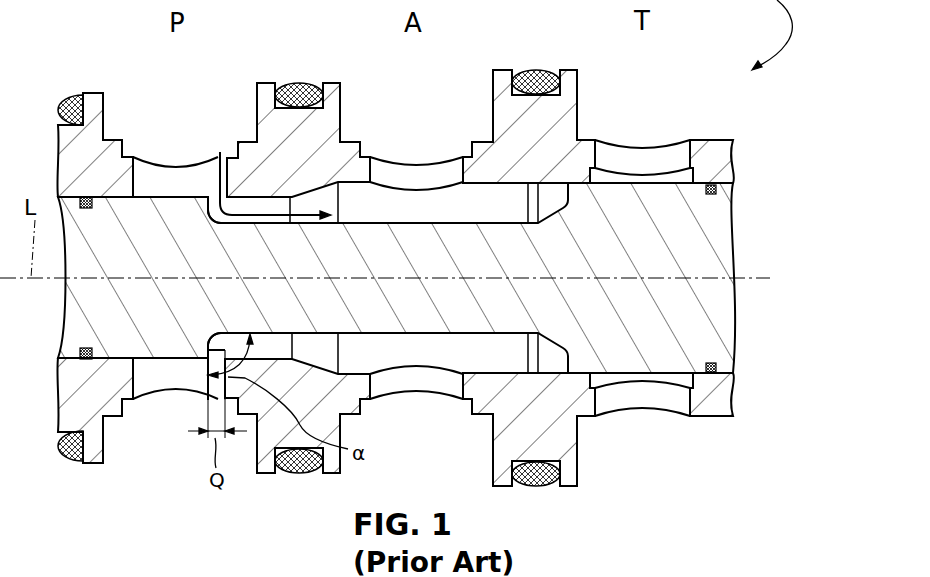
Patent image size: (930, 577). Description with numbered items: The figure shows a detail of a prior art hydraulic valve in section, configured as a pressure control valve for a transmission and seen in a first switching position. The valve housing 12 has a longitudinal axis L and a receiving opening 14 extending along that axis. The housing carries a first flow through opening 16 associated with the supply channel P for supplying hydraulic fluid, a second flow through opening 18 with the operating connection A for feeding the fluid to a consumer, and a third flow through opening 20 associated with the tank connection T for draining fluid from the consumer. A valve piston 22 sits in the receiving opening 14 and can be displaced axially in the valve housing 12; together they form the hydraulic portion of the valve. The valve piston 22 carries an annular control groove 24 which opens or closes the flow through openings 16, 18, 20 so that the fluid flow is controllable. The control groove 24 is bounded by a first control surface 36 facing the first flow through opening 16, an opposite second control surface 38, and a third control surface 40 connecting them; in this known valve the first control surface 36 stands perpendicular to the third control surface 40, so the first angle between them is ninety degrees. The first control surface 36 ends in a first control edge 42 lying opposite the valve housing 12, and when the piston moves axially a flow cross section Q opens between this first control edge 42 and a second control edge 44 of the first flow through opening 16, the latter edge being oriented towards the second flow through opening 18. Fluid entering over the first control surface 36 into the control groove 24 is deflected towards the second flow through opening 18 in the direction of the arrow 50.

The valve housing 12 is at (711, 132).
The receiving opening 14 is at (709, 191).
The first flow through opening 16 is at (180, 178).
The second flow through opening 18 is at (413, 172).
The third flow through opening 20 is at (645, 156).
The valve piston 22 is at (667, 170).
The control groove 24 is at (443, 347).
The first control surface 36 is at (214, 348).
The second control surface 38 is at (565, 362).
The third control surface 40 is at (392, 336).
The first control edge 42 is at (211, 193).
The second control edge 44 is at (228, 203).
The arrow 50 is at (302, 220).